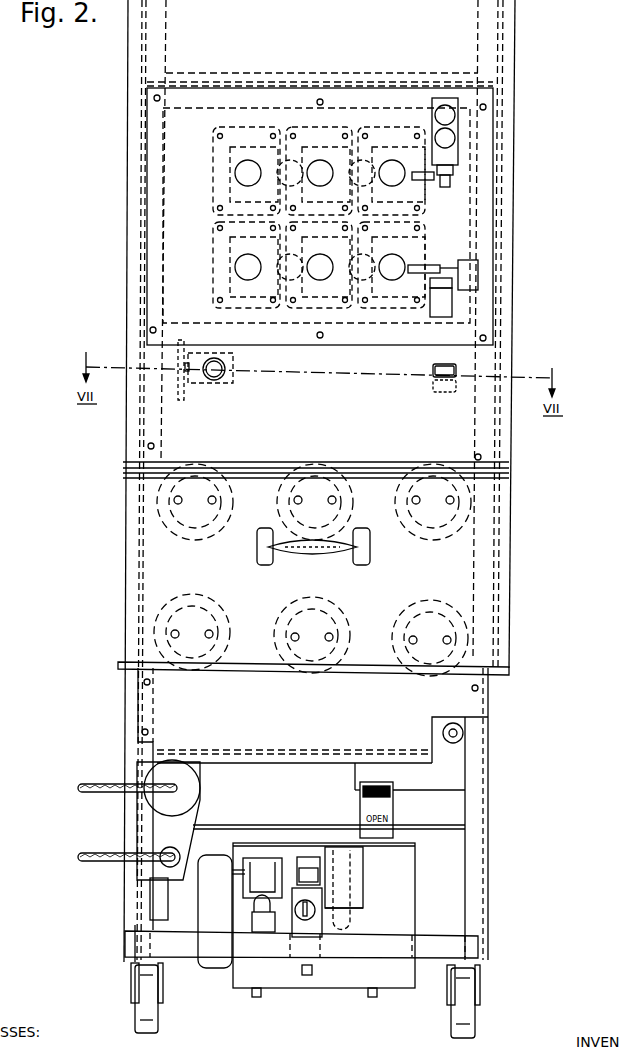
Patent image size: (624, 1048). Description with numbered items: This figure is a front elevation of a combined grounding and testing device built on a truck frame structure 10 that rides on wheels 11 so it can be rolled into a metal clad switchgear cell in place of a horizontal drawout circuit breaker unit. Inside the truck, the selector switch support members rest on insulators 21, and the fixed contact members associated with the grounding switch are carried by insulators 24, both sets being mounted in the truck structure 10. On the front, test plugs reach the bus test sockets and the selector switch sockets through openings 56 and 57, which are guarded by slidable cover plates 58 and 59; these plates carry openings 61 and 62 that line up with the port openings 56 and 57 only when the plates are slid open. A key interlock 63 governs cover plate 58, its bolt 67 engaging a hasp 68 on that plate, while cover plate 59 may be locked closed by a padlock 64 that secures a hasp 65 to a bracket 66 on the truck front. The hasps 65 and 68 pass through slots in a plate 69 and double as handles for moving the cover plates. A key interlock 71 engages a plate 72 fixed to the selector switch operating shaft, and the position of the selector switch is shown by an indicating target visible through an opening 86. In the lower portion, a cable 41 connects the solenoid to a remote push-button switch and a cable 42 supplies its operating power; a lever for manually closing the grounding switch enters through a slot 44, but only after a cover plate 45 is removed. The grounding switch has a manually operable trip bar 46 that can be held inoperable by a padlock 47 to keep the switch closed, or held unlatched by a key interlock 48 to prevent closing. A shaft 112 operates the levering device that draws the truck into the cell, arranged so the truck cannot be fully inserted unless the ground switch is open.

The truck frame structure 10 is at (106, 504).
The wheels 11 is at (160, 1025).
The insulators 21 is at (276, 498).
The insulators 24 is at (273, 631).
The cable 41 is at (112, 854).
The cable 42 is at (110, 783).
The slot 44 is at (352, 873).
The cover plate 45 is at (363, 890).
The trip bar 46 is at (307, 867).
The padlock 47 is at (270, 933).
The key interlock 48 is at (312, 920).
The openings 56 is at (255, 166).
The openings 57 is at (254, 276).
The slidable cover plate 58 is at (229, 152).
The slidable cover plate 59 is at (229, 247).
The openings 61 is at (294, 185).
The openings 62 is at (294, 276).
The key interlock 63 is at (432, 106).
The padlock 64 is at (464, 262).
The hasp 65 is at (431, 285).
The bracket 66 is at (445, 318).
The bolt 67 is at (447, 187).
The hasp 68 is at (420, 181).
The plate 69 is at (494, 190).
The key interlock 71 is at (232, 377).
The plate 72 is at (184, 390).
The opening 86 is at (432, 366).
The shaft 112 is at (463, 735).